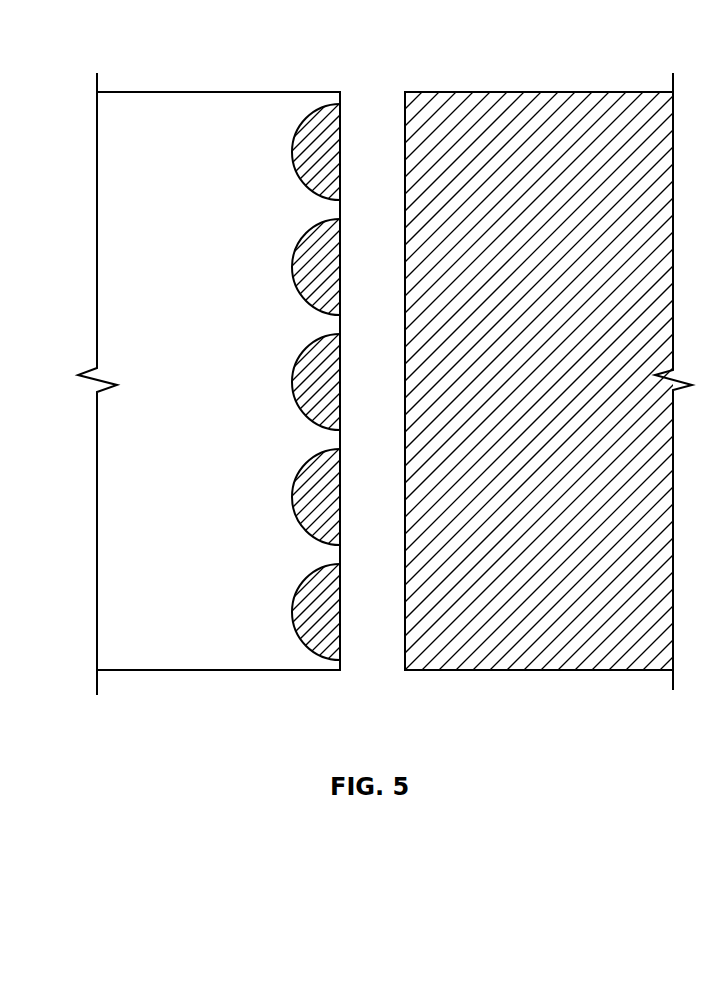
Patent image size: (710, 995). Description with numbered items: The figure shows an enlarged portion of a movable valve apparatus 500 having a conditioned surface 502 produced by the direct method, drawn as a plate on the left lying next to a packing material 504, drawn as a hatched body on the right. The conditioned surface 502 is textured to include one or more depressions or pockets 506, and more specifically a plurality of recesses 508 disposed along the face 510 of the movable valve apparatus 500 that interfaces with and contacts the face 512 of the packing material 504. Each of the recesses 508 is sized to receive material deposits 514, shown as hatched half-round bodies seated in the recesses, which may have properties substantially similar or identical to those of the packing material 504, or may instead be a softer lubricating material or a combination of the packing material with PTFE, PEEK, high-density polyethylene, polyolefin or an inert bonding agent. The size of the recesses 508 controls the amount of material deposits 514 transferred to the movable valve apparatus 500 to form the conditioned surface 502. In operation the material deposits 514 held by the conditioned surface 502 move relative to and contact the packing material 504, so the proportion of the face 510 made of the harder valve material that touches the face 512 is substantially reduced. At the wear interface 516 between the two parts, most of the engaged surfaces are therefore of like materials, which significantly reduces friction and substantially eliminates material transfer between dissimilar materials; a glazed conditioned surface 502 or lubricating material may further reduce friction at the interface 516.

The movable valve apparatus 500 is at (182, 91).
The conditioned surface 502 is at (191, 247).
The packing material 504 is at (550, 91).
The pockets 506 is at (297, 246).
The recesses 508 is at (293, 490).
The face 510 is at (338, 440).
The face of the packing material 512 is at (403, 650).
The material deposits 514 is at (310, 278).
The interface 516 is at (380, 78).